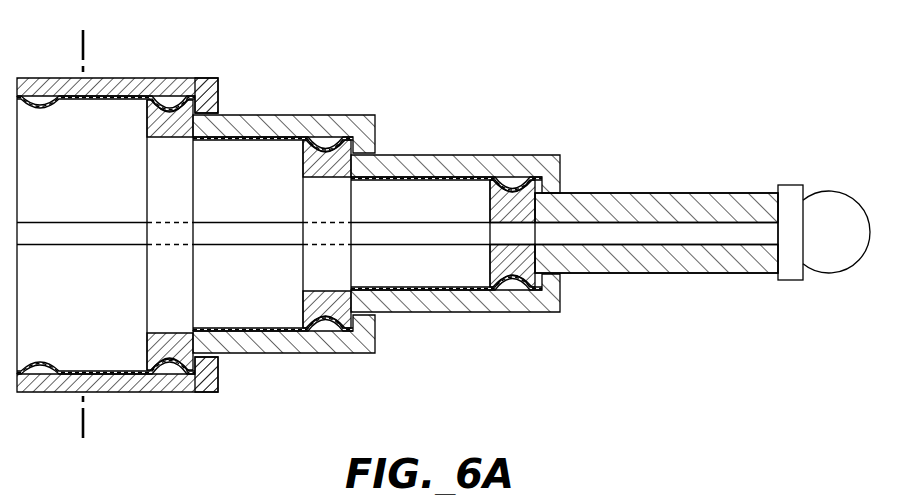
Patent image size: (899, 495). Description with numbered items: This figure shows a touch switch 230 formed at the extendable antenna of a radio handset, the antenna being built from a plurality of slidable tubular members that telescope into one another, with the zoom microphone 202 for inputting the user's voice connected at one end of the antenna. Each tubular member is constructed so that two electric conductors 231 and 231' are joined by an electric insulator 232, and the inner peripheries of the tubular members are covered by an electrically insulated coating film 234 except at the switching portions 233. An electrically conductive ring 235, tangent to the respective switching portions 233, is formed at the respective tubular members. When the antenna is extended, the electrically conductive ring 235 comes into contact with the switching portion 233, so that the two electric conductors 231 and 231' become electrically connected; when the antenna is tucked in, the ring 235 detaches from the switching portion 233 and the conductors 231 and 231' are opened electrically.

The touch switch 230 is at (443, 240).
The electric conductor 231 is at (301, 119).
The electric conductor 231' is at (304, 351).
The electric insulator 232 is at (98, 232).
The switching portion 233 is at (192, 88).
The electrically insulated coating film 234 is at (110, 372).
The electrically conductive ring 235 is at (167, 121).
The zoom microphone 202 is at (830, 198).